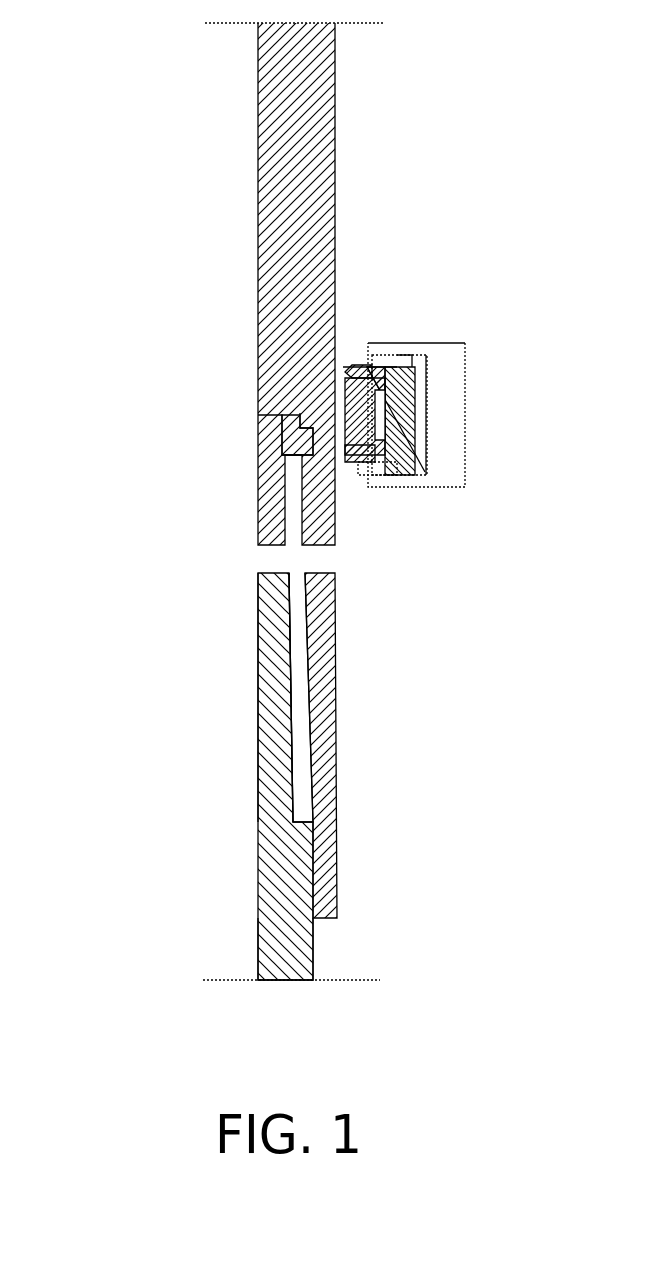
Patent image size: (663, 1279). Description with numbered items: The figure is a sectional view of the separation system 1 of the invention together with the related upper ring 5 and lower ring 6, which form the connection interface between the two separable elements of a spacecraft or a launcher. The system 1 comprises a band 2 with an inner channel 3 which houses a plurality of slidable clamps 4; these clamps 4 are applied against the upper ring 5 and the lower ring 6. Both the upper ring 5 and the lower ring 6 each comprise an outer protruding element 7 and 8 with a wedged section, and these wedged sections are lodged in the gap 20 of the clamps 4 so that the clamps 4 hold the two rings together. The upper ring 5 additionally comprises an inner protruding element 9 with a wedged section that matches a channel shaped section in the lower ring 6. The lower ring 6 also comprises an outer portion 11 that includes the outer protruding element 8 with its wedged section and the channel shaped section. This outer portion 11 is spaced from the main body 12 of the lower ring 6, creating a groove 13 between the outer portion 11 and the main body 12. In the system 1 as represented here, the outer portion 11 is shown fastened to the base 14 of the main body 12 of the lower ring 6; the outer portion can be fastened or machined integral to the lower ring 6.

The separation system 1 is at (215, 247).
The band 2 is at (448, 402).
The inner channel 3 is at (420, 377).
The slidable clamps 4 is at (420, 475).
The upper ring 5 is at (285, 160).
The lower ring 6 is at (273, 663).
The outer protruding element 7 is at (353, 370).
The outer protruding element 8 is at (358, 465).
The inner protruding element 9 is at (285, 445).
The outer portion 11 is at (325, 632).
The main body 12 is at (283, 875).
The groove 13 is at (302, 765).
The base 14 is at (293, 955).
The gap 20 is at (388, 458).